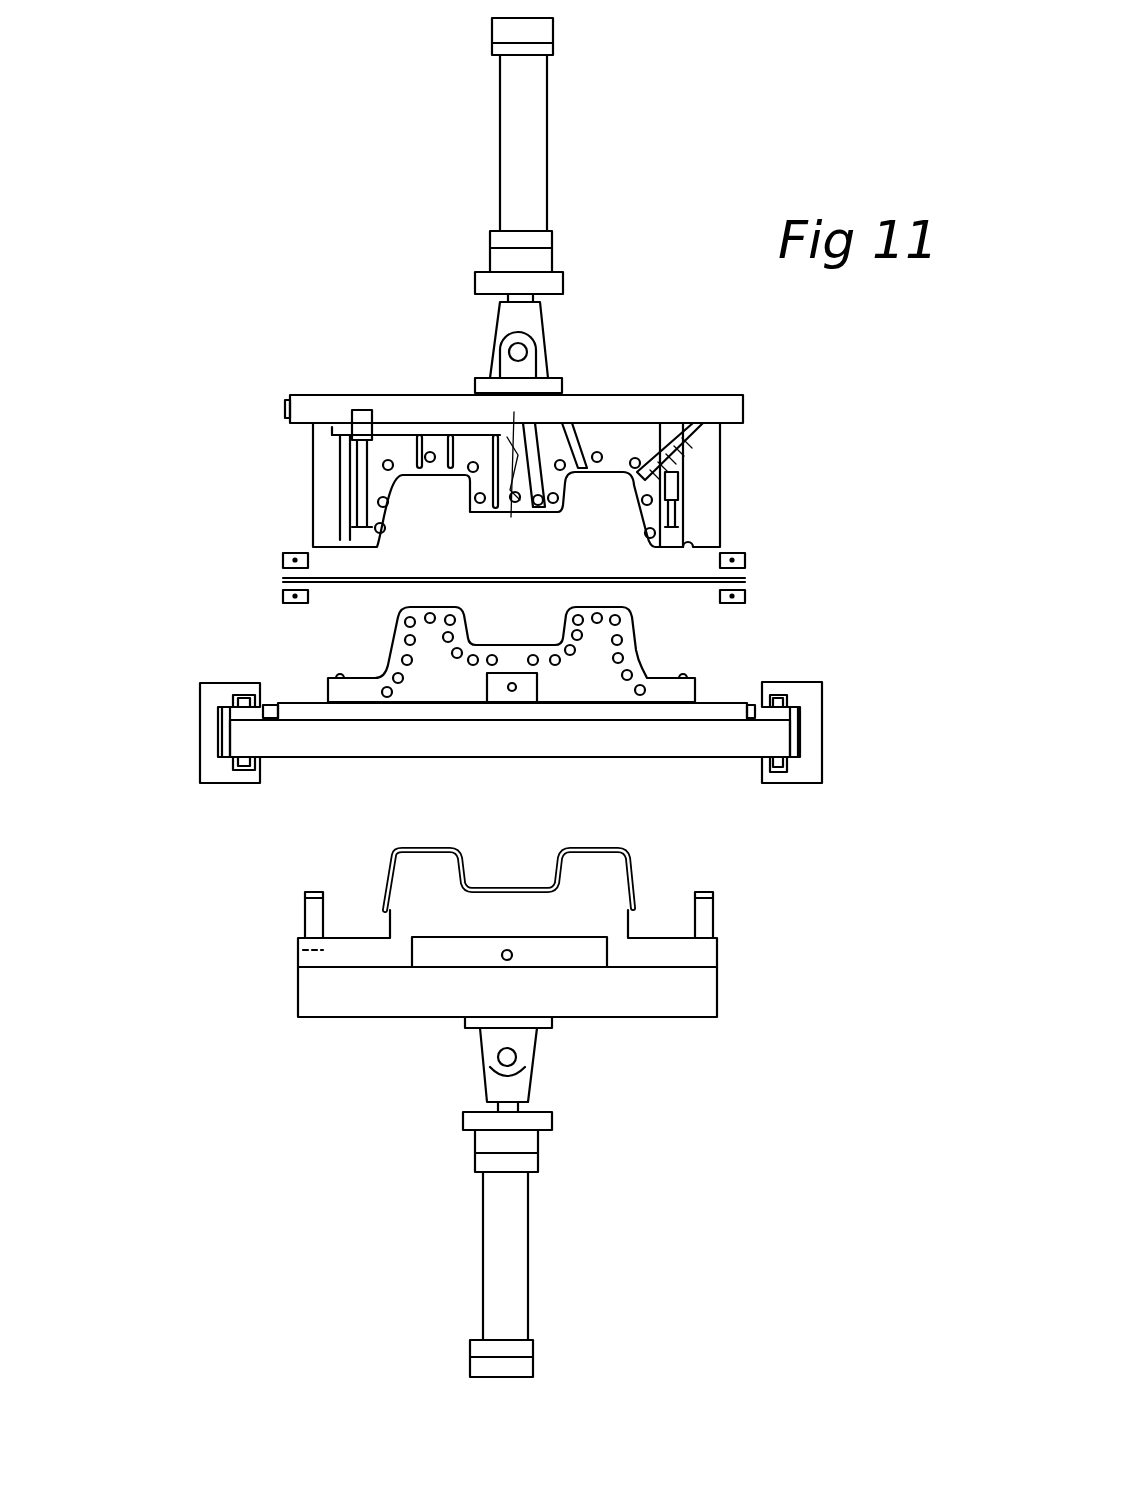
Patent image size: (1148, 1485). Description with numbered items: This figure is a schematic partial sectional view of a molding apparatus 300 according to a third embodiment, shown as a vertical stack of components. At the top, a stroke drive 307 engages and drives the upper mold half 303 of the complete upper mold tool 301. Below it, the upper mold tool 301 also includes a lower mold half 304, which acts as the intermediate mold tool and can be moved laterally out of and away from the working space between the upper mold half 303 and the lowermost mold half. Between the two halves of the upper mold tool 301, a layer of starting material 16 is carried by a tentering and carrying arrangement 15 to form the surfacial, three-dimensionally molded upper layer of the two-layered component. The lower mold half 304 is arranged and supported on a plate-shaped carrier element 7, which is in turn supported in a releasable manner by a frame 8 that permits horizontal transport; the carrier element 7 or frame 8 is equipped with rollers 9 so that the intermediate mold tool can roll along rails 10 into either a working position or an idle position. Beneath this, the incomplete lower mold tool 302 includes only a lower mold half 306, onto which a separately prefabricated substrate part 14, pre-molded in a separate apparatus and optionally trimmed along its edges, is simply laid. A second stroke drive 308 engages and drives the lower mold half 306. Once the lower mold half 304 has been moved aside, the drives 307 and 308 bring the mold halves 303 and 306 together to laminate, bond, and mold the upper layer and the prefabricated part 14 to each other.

The apparatus 300 is at (385, 370).
The upper mold tool 301 is at (312, 665).
The lower mold tool 302 is at (298, 952).
The upper mold half 303 is at (710, 493).
The lower mold half 304 is at (638, 658).
The lower mold half 306 is at (690, 953).
The stroke drive 307 is at (535, 208).
The second stroke drive 308 is at (517, 1318).
The carrier element 7 is at (663, 713).
The frame 8 is at (565, 737).
The rollers 9 is at (778, 767).
The rails 10 is at (820, 717).
The prefabricated substrate part 14 is at (390, 853).
The tentering and carrying arrangement 15 is at (722, 562).
The starting material 16 is at (745, 580).